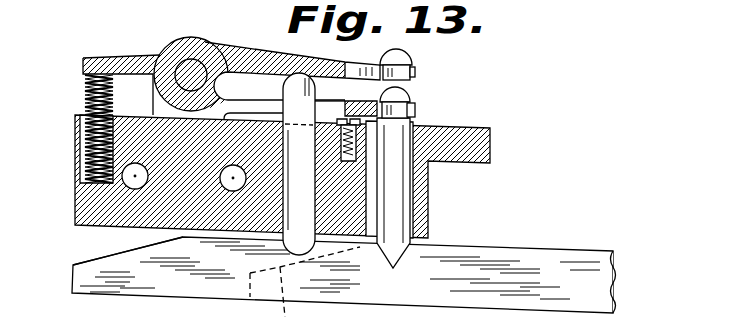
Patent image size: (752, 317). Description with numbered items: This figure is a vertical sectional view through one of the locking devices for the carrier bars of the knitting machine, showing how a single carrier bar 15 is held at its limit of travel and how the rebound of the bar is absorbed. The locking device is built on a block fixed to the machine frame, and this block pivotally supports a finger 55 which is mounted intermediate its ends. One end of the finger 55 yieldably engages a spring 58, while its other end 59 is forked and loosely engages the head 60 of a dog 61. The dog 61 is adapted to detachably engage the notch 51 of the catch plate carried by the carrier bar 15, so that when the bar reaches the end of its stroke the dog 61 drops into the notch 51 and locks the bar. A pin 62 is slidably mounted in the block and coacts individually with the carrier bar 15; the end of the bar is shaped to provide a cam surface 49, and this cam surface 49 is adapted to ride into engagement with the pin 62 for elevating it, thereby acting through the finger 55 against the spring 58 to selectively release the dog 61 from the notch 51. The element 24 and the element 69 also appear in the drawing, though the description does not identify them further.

The carrier bar 15 is at (617, 262).
The frame block 24 is at (282, 169).
The cam surface 49 is at (92, 263).
The notch 51 is at (400, 257).
The finger 55 is at (168, 60).
The spring 58 is at (90, 76).
The forked end 59 is at (413, 65).
The head 60 is at (410, 88).
The dog 61 is at (413, 118).
The pin 62 is at (305, 230).
The opening 69 is at (165, 316).